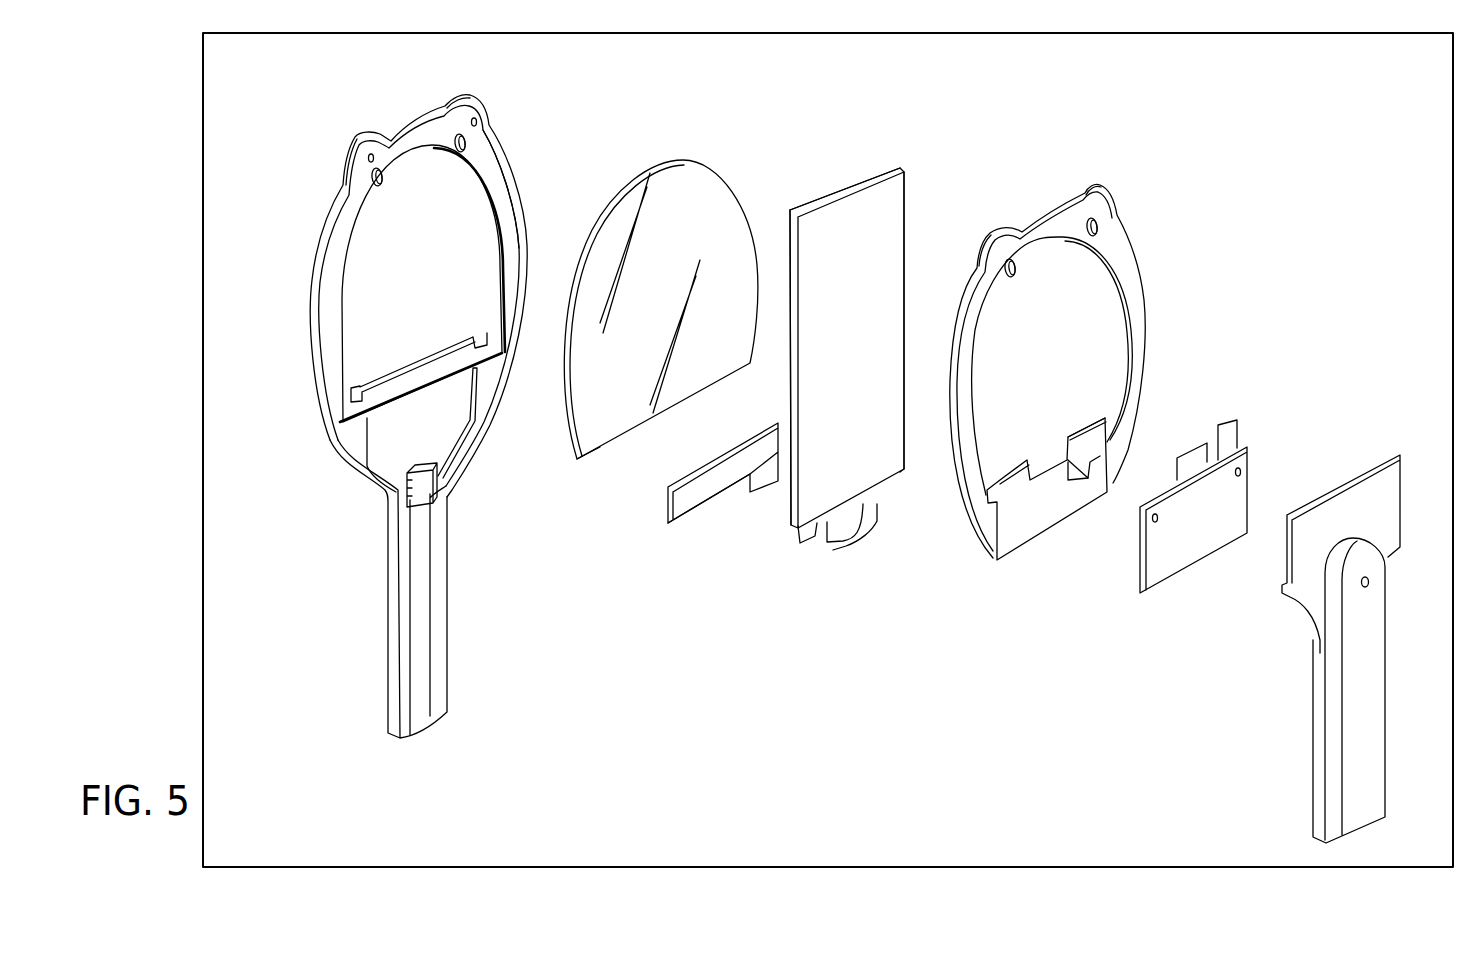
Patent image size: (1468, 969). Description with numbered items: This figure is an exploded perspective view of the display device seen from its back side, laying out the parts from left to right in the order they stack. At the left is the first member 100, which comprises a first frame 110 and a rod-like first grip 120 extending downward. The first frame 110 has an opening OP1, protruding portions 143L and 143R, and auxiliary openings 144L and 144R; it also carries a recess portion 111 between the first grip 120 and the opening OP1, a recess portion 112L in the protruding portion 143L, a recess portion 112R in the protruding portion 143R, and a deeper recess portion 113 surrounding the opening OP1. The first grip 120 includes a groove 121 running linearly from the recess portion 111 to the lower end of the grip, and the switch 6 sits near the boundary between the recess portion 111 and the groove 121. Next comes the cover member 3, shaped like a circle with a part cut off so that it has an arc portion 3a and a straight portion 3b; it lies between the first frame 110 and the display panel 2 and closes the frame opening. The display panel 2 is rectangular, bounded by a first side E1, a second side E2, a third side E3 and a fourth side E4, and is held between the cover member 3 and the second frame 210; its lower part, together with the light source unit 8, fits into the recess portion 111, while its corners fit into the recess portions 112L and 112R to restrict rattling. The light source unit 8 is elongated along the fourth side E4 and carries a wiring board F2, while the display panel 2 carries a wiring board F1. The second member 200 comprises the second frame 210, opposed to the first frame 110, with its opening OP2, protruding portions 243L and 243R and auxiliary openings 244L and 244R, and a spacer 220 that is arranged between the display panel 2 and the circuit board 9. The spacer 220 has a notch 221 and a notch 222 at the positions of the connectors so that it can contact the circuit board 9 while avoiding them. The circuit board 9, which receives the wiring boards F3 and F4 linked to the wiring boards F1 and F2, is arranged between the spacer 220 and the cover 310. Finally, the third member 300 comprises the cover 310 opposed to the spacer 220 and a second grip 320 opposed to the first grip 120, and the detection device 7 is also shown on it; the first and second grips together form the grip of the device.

The first member 100 is at (276, 558).
The first frame 110 is at (317, 428).
The first grip 120 is at (384, 569).
The groove 121 is at (424, 658).
The recess portion 111 is at (421, 441).
The recess portion 112R is at (371, 153).
The recess portion 112L is at (478, 121).
The recess portion 113 is at (502, 200).
The protruding portion 143R is at (343, 155).
The protruding portion 143L is at (466, 94).
The auxiliary opening 144R is at (378, 193).
The auxiliary opening 144L is at (461, 153).
The opening OP1 is at (357, 285).
The switch 6 is at (431, 488).
The cover member 3 is at (687, 158).
The arc portion 3a is at (625, 177).
The straight portion 3b is at (600, 455).
The display panel 2 is at (866, 172).
The first side E1 is at (910, 296).
The second side E2 is at (788, 402).
The third side E3 is at (811, 195).
The fourth side E4 is at (818, 530).
The wiring board F1 is at (875, 522).
The light source unit 8 is at (690, 470).
The wiring board F2 is at (693, 508).
The second member 200 is at (1226, 273).
The second frame 210 is at (1148, 256).
The spacer 220 is at (1091, 410).
The notch 221 is at (1050, 465).
The notch 222 is at (1081, 475).
The protruding portion 243R is at (988, 234).
The protruding portion 243L is at (1110, 184).
The auxiliary opening 244R is at (1012, 281).
The auxiliary opening 244L is at (1095, 240).
The opening OP2 is at (981, 448).
The circuit board 9 is at (1203, 557).
The wiring board F3 is at (1178, 478).
The wiring board F4 is at (1234, 434).
The third member 300 is at (1186, 703).
The cover 310 is at (1274, 577).
The second grip 320 is at (1306, 696).
The detection device 7 is at (1369, 582).